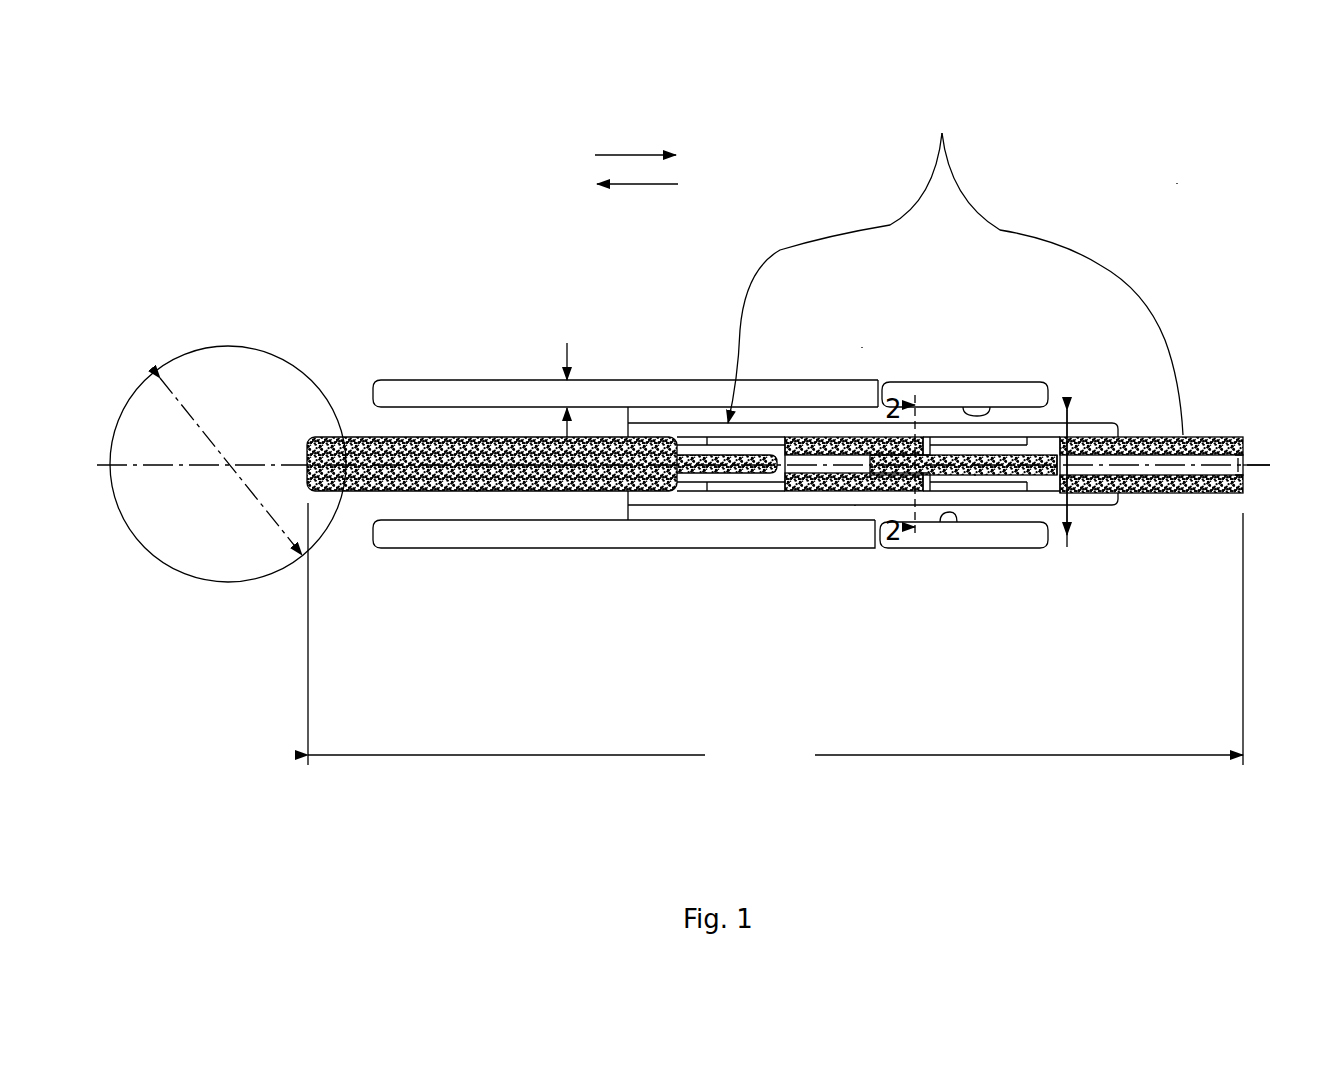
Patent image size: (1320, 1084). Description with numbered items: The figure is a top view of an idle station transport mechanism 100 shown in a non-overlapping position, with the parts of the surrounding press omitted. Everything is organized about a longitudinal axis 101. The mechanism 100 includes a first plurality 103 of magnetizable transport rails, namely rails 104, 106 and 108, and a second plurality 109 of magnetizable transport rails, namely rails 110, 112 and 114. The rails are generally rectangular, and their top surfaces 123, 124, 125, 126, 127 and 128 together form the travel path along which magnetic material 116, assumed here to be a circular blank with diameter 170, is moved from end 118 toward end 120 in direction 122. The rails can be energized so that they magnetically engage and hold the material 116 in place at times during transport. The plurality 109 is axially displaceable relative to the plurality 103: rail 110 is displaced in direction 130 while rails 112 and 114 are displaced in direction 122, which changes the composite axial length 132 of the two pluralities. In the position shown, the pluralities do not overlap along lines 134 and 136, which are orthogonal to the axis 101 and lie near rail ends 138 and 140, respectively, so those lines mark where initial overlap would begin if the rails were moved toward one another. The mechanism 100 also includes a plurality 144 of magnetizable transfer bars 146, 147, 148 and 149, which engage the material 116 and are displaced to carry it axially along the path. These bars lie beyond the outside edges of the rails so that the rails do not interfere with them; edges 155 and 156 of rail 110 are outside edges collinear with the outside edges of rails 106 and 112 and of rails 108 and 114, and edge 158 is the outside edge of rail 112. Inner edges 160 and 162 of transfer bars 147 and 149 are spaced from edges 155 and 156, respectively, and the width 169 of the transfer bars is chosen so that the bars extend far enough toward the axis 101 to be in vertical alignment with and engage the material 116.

The idle station transport mechanism 100 is at (1177, 183).
The longitudinal axis 101 is at (1257, 460).
The plurality of magnetizable transport rails 103 is at (930, 415).
The transport rail 104 is at (990, 457).
The transport rail 106 is at (827, 425).
The transport rail 108 is at (820, 497).
The plurality of magnetizable transport rails 109 is at (955, 265).
The transport rail 110 is at (388, 435).
The transport rail 112 is at (1143, 433).
The transport rail 114 is at (1137, 497).
The magnetic material 116 is at (190, 350).
The end 118 is at (297, 403).
The end 120 is at (1247, 428).
The direction 122 is at (615, 155).
The top surface 123 is at (975, 477).
The top surface 124 is at (843, 438).
The top surface 125 is at (855, 506).
The top surface 126 is at (372, 477).
The top surface 127 is at (1222, 435).
The top surface 128 is at (1185, 493).
The direction 130 is at (642, 184).
The composite axial length 132 is at (775, 637).
The line 134 is at (792, 547).
The line 136 is at (1067, 517).
The end 138 is at (787, 487).
The end 140 is at (1047, 492).
The plurality of transfer bars 144 is at (862, 347).
The transfer bar 146 is at (472, 378).
The transfer bar 147 is at (1022, 380).
The transfer bar 148 is at (530, 550).
The transfer bar 149 is at (930, 550).
The outside edge 155 is at (497, 437).
The outside edge 156 is at (477, 493).
The outside edge 158 is at (1183, 435).
The inner edge 160 is at (990, 407).
The inner edge 162 is at (953, 522).
The width 169 is at (567, 343).
The diameter 170 is at (213, 445).